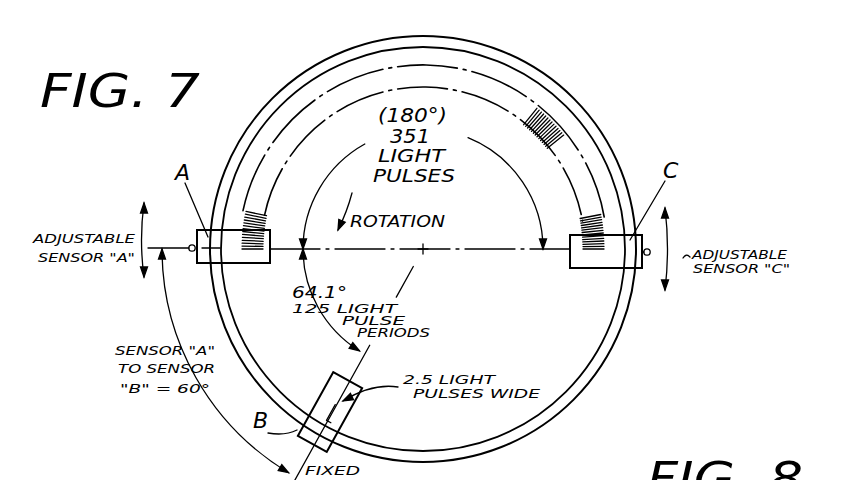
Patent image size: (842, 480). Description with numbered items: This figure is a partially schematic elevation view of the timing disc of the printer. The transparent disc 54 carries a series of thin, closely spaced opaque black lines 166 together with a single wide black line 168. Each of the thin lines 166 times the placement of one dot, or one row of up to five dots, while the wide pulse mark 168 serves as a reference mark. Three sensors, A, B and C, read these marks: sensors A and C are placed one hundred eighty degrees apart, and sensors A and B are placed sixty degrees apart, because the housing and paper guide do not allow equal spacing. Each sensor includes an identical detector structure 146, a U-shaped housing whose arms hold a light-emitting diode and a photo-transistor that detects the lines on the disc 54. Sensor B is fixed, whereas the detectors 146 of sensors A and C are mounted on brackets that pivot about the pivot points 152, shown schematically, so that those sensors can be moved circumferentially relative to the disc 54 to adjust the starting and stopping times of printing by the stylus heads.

The transparent disc 54 is at (573, 352).
The detector structure 146 is at (603, 267).
The pivot point 152 is at (190, 252).
The thin opaque black lines 166 is at (310, 100).
The wide black line 168 is at (342, 400).